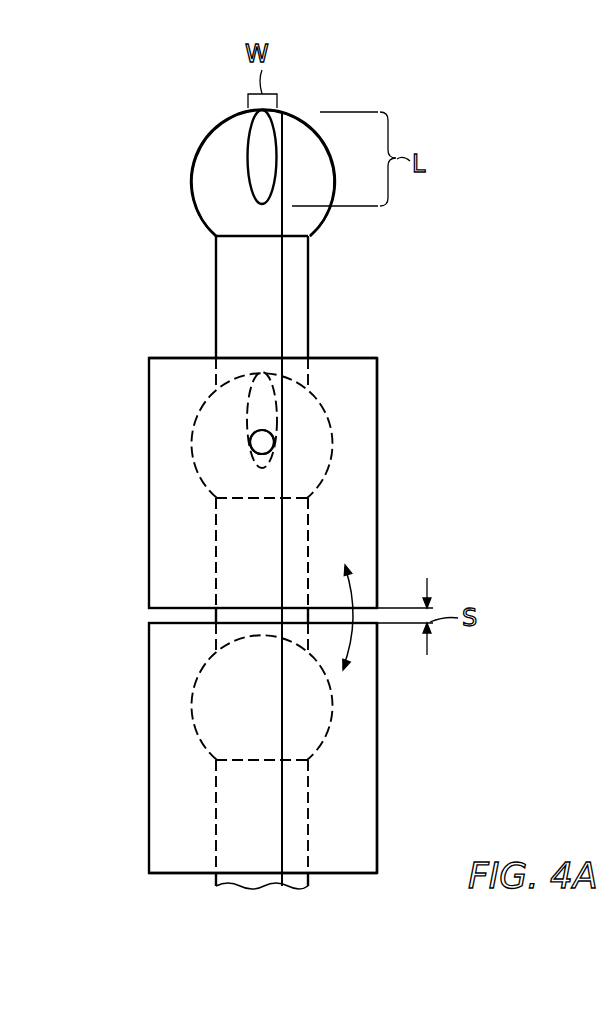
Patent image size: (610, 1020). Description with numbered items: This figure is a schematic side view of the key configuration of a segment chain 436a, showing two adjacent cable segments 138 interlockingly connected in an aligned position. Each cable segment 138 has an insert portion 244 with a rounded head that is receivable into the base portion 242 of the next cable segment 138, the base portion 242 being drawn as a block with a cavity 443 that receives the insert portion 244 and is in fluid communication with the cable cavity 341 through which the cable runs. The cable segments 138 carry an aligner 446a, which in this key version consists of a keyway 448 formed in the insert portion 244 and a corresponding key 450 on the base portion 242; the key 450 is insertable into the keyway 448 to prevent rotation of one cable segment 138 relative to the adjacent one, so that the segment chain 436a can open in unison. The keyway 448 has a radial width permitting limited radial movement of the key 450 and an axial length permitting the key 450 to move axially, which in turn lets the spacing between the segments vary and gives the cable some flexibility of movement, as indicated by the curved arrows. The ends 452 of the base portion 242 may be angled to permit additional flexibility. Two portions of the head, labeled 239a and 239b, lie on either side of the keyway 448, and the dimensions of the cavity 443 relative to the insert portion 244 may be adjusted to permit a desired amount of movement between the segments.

The segment chain 436a is at (182, 142).
The first head portion 239a is at (223, 118).
The second head portion 239b is at (302, 118).
The insert portion 244 is at (200, 218).
The cable segment 138 is at (142, 378).
The ends of the base portion 452 is at (353, 359).
The base portion 242 is at (378, 405).
The aligner 446a is at (240, 377).
The keyway 448 is at (250, 441).
The key 450 is at (275, 444).
The cable cavity 341 is at (217, 532).
The cavity 443 is at (305, 528).